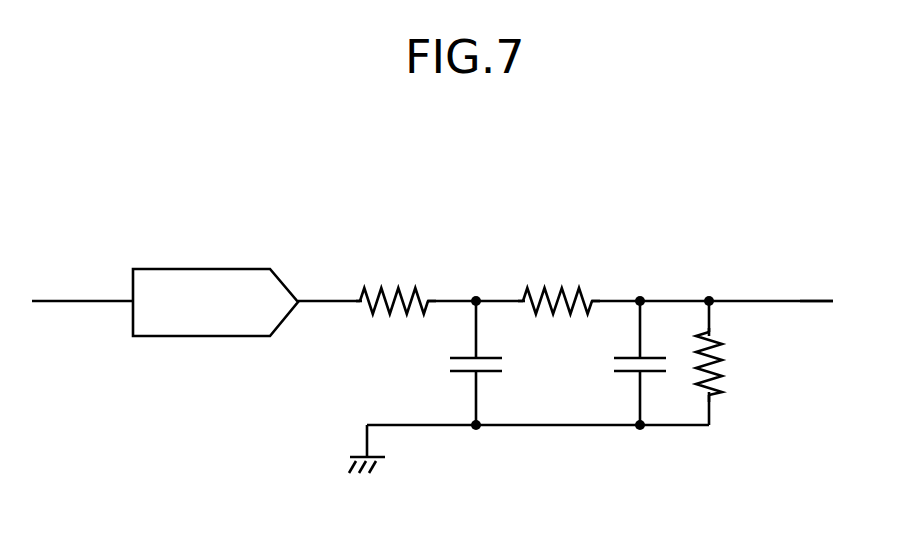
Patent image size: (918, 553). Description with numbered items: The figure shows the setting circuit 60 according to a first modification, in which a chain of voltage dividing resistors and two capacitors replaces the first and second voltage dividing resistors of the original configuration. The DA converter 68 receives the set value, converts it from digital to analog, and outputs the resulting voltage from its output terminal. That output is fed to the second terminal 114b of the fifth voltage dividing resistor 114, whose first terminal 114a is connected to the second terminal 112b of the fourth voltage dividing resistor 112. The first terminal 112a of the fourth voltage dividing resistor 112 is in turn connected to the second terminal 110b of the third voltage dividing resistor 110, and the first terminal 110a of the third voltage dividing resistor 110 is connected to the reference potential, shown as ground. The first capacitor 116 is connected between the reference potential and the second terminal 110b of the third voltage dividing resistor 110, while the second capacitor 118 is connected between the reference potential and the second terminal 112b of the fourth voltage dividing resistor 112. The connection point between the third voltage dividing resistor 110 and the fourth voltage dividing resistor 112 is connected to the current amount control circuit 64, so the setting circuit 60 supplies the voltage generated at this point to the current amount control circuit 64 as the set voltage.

The setting circuit 60 is at (594, 165).
The current amount control circuit 64 is at (835, 305).
The DA converter 68 is at (197, 268).
The third voltage dividing resistor 110 is at (715, 362).
The first terminal 110a is at (710, 400).
The second terminal 110b is at (710, 332).
The fourth voltage dividing resistor 112 is at (562, 290).
The first terminal 112a is at (597, 300).
The second terminal 112b is at (523, 300).
The fifth voltage dividing resistor 114 is at (397, 290).
The first terminal 114a is at (433, 299).
The second terminal 114b is at (360, 300).
The first capacitor 116 is at (655, 357).
The second capacitor 118 is at (490, 357).